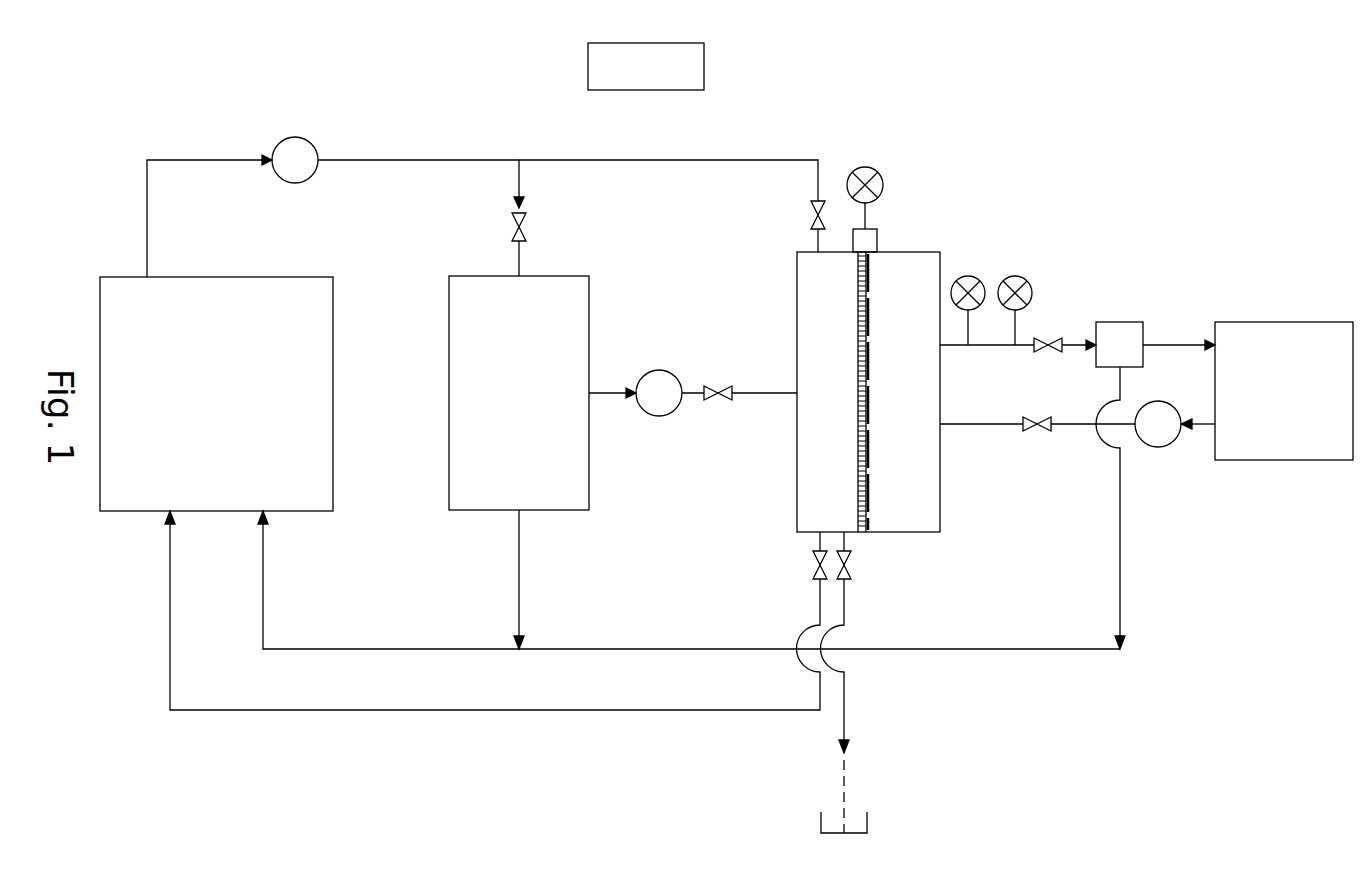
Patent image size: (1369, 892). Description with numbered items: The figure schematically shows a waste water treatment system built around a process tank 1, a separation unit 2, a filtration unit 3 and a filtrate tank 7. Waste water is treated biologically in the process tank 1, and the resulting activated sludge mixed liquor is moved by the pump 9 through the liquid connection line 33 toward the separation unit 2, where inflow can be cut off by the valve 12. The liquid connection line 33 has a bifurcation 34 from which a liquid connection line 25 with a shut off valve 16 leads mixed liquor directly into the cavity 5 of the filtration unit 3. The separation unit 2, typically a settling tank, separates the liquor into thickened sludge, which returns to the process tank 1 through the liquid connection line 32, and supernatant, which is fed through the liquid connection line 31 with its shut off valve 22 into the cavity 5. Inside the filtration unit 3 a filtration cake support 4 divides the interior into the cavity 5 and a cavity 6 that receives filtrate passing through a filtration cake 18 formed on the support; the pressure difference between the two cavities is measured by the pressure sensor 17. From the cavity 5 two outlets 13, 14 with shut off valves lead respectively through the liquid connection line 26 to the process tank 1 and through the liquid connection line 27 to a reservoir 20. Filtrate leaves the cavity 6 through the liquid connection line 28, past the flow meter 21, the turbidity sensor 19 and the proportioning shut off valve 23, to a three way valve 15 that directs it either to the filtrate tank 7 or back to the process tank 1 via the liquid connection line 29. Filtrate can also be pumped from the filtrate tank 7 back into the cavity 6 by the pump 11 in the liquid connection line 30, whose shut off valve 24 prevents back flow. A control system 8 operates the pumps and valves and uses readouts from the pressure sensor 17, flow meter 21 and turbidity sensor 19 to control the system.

The process tank 1 is at (205, 277).
The separation unit 2 is at (545, 276).
The filtration unit 3 is at (899, 252).
The filtration cake support 4 is at (868, 357).
The cavity 5 is at (816, 311).
The cavity 6 is at (942, 468).
The filtrate tank 7 is at (1305, 322).
The control system 8 is at (657, 43).
The pump 9 is at (306, 140).
The pump 11 is at (1141, 445).
The valve 12 is at (510, 230).
The outlet 13 is at (811, 579).
The outlet 14 is at (855, 577).
The three way valve 15 is at (1155, 331).
The shut off valve 16 is at (812, 226).
The pressure sensor 17 is at (861, 170).
The filtration cake 18 is at (857, 422).
The turbidity sensor 19 is at (1032, 293).
The reservoir 20 is at (858, 815).
The flow meter 21 is at (976, 279).
The shut off valve 22 is at (716, 397).
The shut off valve 23 is at (1057, 350).
The shut off valve 24 is at (1033, 432).
The liquid connection line 25 is at (660, 159).
The liquid connection line 26 is at (562, 712).
The liquid connection line 27 is at (848, 718).
The liquid connection line 28 is at (985, 348).
The liquid connection line 29 is at (1120, 600).
The liquid connection line 30 is at (998, 427).
The liquid connection line 31 is at (600, 398).
The liquid connection line 32 is at (522, 560).
The liquid connection line 33 is at (420, 159).
The bifurcation 34 is at (520, 159).